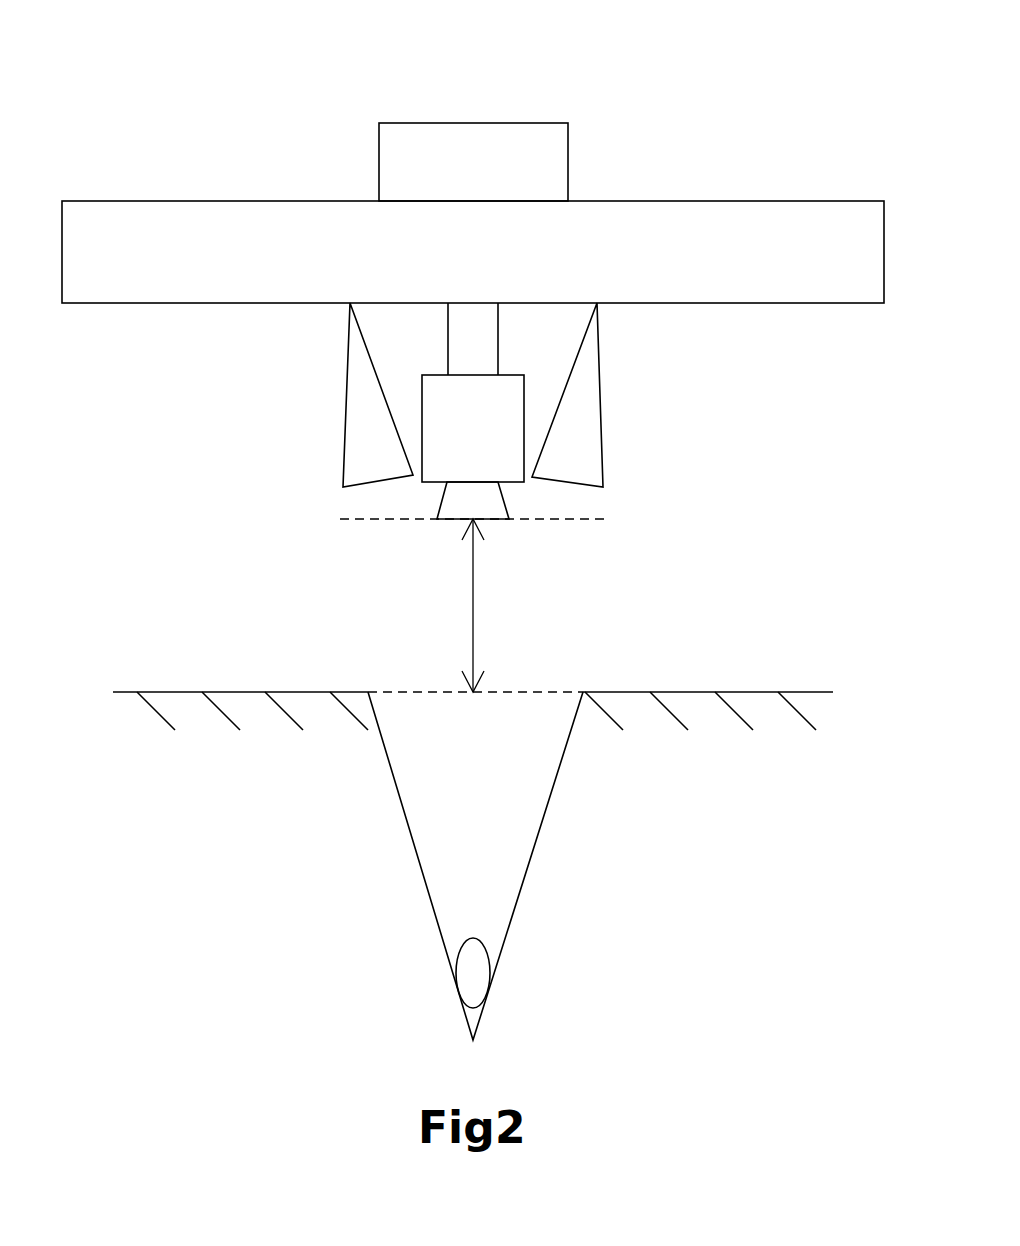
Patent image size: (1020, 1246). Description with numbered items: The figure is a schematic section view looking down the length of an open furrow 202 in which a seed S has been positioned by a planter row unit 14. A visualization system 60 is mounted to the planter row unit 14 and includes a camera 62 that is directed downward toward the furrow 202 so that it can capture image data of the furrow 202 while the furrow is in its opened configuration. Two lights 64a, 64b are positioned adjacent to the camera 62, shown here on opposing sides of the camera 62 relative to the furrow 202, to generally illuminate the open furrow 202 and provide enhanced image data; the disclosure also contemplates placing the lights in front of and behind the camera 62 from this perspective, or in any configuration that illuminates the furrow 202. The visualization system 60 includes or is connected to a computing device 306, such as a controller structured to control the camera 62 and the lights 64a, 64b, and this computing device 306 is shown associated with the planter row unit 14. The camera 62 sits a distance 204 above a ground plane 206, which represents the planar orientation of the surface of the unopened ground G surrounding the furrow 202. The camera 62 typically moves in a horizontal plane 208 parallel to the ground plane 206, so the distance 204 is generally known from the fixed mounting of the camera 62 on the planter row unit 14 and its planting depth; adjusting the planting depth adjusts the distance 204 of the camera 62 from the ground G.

The computing device 306 is at (473, 123).
The planter row unit 14 is at (782, 201).
The visualization system 60 is at (501, 411).
The camera 62 is at (507, 467).
The light 64a is at (355, 393).
The light 64b is at (600, 400).
The horizontal plane 208 is at (365, 520).
The distance 204 is at (473, 605).
The ground plane 206 is at (407, 692).
The ground G is at (763, 692).
The furrow 202 is at (556, 851).
The seed S is at (473, 973).